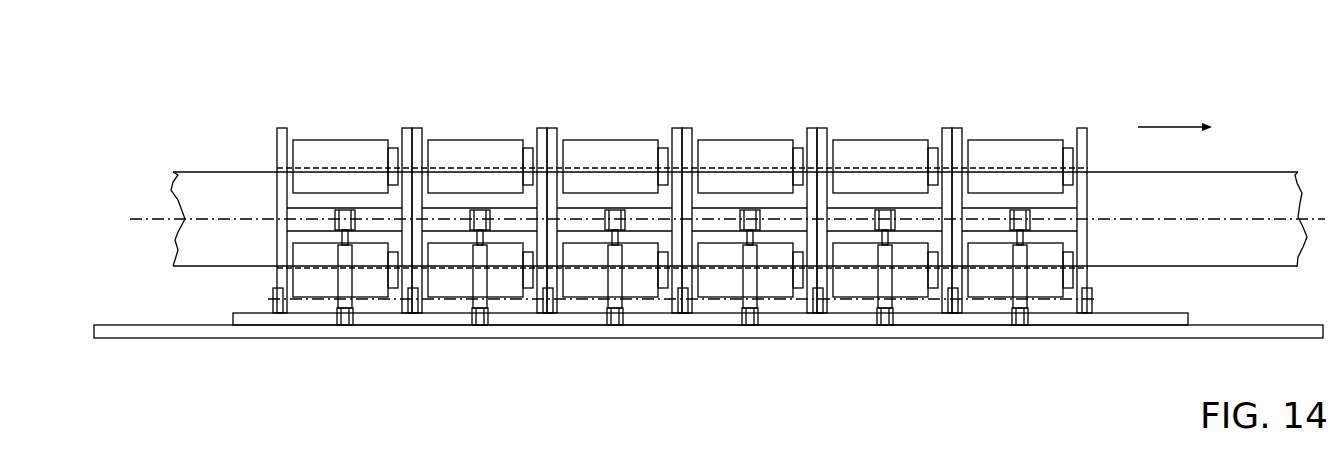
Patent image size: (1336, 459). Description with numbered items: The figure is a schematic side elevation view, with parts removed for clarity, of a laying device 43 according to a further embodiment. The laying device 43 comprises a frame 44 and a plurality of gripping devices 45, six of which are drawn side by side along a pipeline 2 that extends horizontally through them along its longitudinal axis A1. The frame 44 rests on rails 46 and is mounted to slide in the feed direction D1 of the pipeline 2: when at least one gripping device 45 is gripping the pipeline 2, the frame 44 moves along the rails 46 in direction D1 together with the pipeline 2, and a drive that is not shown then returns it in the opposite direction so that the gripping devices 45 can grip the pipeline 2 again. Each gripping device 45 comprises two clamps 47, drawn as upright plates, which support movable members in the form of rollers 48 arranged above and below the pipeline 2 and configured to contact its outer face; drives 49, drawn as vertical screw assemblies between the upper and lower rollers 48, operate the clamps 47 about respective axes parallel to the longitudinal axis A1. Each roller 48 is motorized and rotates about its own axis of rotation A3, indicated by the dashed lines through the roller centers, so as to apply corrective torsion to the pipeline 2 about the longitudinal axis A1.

The pipeline 2 is at (1240, 193).
The laying device 43 is at (1237, 120).
The frame 44 is at (1098, 308).
The gripping device 45 is at (352, 106).
The rails 46 is at (1197, 333).
The clamp 47 is at (283, 128).
The roller 48 is at (373, 147).
The drive 49 is at (337, 309).
The longitudinal axis A1 is at (1267, 220).
The axis of rotation A3 is at (333, 165).
The feed direction D1 is at (1175, 125).